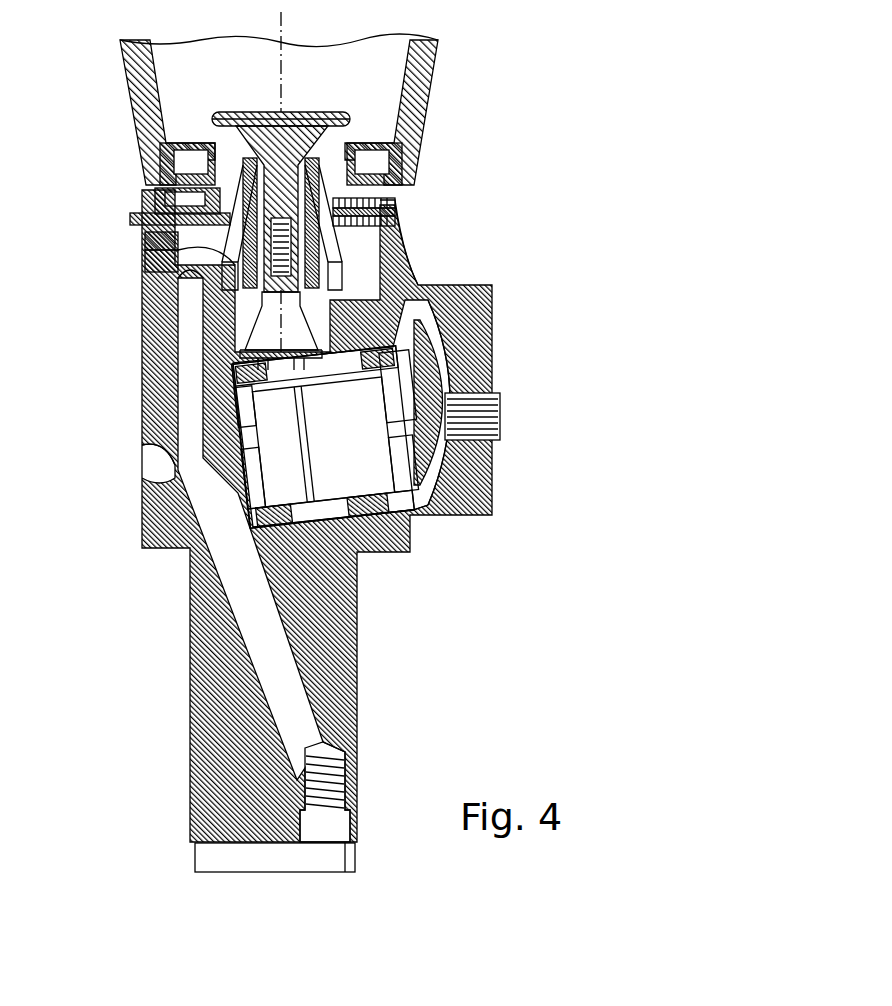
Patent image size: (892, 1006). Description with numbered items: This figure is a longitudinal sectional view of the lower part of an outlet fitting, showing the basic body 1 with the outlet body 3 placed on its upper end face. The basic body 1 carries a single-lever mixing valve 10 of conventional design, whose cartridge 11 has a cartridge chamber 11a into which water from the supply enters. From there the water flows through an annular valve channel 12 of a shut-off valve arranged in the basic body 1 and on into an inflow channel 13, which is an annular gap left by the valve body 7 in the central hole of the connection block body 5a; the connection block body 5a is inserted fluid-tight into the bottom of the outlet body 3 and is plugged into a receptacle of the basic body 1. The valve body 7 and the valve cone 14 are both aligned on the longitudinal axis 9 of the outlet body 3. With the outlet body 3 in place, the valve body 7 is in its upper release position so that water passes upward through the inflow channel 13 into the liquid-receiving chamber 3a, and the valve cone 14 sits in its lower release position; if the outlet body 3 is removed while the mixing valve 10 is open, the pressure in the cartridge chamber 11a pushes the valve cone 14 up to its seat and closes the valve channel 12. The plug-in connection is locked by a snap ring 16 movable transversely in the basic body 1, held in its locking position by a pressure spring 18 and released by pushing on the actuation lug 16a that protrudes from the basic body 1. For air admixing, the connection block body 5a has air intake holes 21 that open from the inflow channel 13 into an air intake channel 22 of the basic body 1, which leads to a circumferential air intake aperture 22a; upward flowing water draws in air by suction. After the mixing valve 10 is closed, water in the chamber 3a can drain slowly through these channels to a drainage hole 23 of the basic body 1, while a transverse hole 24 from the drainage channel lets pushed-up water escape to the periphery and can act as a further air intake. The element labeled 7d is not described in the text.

The basic body 1 is at (370, 585).
The outlet body 3 is at (432, 100).
The liquid-receiving chamber 3a is at (178, 62).
The connection block body 5a is at (225, 168).
The valve body 7 is at (326, 112).
The plate top surface 7d is at (232, 112).
The longitudinal axis 9 is at (288, 16).
The single-lever mixing valve 10 is at (490, 376).
The cartridge 11 is at (418, 478).
The cartridge chamber 11a is at (246, 372).
The annular valve channel 12 is at (300, 316).
The inflow channel 13 is at (396, 242).
The valve cone 14 is at (244, 338).
The snap ring 16 is at (165, 214).
The actuation lug 16a is at (136, 216).
The pressure spring 18 is at (396, 205).
The air intake holes 21 is at (250, 182).
The air intake channel 22 is at (170, 280).
The air intake aperture 22a is at (150, 262).
The drainage hole 23 is at (196, 484).
The transverse hole 24 is at (156, 456).